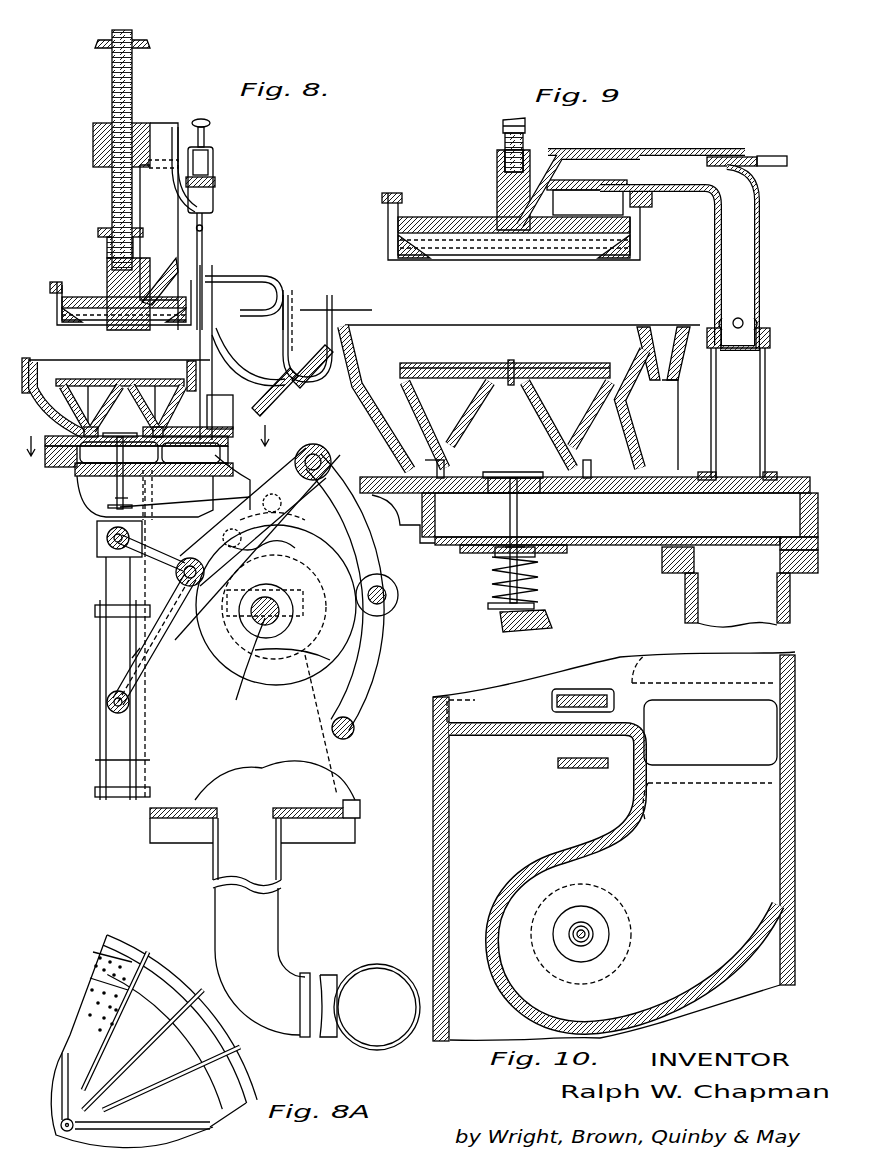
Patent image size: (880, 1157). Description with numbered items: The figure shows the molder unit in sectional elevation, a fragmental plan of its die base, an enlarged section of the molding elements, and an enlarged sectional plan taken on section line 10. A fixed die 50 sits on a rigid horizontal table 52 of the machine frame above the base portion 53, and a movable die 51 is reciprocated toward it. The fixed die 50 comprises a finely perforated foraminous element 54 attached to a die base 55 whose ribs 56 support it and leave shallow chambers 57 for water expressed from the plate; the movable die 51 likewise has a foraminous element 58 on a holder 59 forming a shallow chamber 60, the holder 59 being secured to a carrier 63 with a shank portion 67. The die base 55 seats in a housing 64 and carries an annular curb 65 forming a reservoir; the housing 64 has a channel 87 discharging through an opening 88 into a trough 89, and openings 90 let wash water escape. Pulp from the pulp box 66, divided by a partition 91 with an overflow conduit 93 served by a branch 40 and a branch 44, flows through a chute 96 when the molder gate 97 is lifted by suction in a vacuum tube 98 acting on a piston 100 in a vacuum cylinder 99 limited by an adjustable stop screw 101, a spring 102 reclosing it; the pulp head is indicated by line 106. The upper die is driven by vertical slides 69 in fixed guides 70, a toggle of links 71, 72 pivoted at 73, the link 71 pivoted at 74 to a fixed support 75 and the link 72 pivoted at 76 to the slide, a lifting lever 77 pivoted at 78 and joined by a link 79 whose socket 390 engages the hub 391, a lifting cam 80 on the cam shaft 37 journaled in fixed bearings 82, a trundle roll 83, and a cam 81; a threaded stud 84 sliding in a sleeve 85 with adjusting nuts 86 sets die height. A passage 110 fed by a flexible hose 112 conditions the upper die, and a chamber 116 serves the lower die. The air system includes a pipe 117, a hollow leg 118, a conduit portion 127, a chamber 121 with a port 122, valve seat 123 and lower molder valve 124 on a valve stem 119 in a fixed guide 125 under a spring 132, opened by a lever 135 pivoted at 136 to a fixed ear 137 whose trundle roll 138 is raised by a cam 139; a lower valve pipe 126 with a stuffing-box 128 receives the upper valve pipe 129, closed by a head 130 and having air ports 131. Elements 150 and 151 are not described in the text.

In FIG. 8, the section line 10 is at (151, 430).
In FIG. 8, the cam shaft 37 is at (244, 690).
In FIG. 8, the supply branch 40 is at (300, 416).
In FIG. 8, the overflow branch 44 is at (318, 392).
In FIG. 8, the fixed die 50 is at (78, 378).
In FIG. 9, the fixed die 50 is at (582, 342).
In FIG. 8, the movable die 51 is at (86, 300).
In FIG. 9, the movable die 51 is at (450, 260).
In FIG. 8, the table 52 is at (60, 456).
In FIG. 9, the table 52 is at (650, 478).
In FIG. 10, the table 52 is at (434, 860).
In FIG. 8, the base portion 53 is at (150, 820).
In FIG. 8, the foraminous element 54 is at (114, 380).
In FIG. 9, the foraminous element 54 is at (512, 365).
In FIG. 8, the die base 55 is at (72, 425).
In FIG. 9, the die base 55 is at (640, 420).
In FIG. 8A, the ribs 56 is at (115, 965).
In FIG. 9, the ribs 56 is at (510, 362).
In FIG. 8, the shallow chambers 57 is at (120, 382).
In FIG. 8A, the shallow chambers 57 is at (178, 1045).
In FIG. 9, the shallow chambers 57 is at (460, 365).
In FIG. 8, the foraminous element 58 is at (98, 300).
In FIG. 9, the foraminous element 58 is at (552, 240).
In FIG. 8, the holder 59 is at (66, 310).
In FIG. 9, the holder 59 is at (398, 238).
In FIG. 9, the shallow chamber 60 is at (565, 220).
In FIG. 8, the carrier 63 is at (50, 287).
In FIG. 9, the carrier 63 is at (400, 195).
In FIG. 8, the housing 64 is at (52, 400).
In FIG. 9, the housing 64 is at (380, 400).
In FIG. 8, the annular curb 65 is at (26, 358).
In FIG. 9, the annular curb 65 is at (640, 345).
In FIG. 8, the pulp box 66 is at (296, 300).
In FIG. 8, the shank portion 67 is at (108, 262).
In FIG. 9, the shank portion 67 is at (498, 172).
In FIG. 8, the vertical slides 69 is at (108, 578).
In FIG. 10, the vertical slides 69 is at (580, 700).
In FIG. 8, the fixed guides 70 is at (132, 735).
In FIG. 8, the toggle link 71 is at (170, 560).
In FIG. 8, the toggle link 72 is at (178, 655).
In FIG. 8, the toggle pivot 73 is at (172, 632).
In FIG. 8, the pivot 74 is at (107, 540).
In FIG. 8, the fixed support 75 is at (97, 530).
In FIG. 8, the pivot 76 is at (107, 706).
In FIG. 8, the lifting lever 77 is at (376, 660).
In FIG. 8, the pivot 78 is at (354, 736).
In FIG. 8, the link 79 is at (286, 470).
In FIG. 8, the lifting cam 80 is at (266, 630).
In FIG. 8, the cam 81 is at (316, 650).
In FIG. 8, the fixed bearings 82 is at (260, 598).
In FIG. 8, the trundle roll 83 is at (178, 578).
In FIG. 8, the threaded stud 84 is at (114, 118).
In FIG. 9, the threaded stud 84 is at (506, 120).
In FIG. 8, the sleeve 85 is at (96, 165).
In FIG. 8, the adjusting nuts 86 is at (142, 48).
In FIG. 8, the channel 87 is at (84, 380).
In FIG. 9, the channel 87 is at (682, 372).
In FIG. 8, the opening 88 is at (206, 404).
In FIG. 8, the trough 89 is at (400, 590).
In FIG. 9, the openings 90 is at (443, 496).
In FIG. 8, the partition 91 is at (286, 292).
In FIG. 8, the overflow conduit 93 is at (312, 312).
In FIG. 8, the chute 96 is at (230, 356).
In FIG. 8, the molder gate 97 is at (204, 250).
In FIG. 8, the vacuum tube 98 is at (177, 150).
In FIG. 8, the vacuum cylinder 99 is at (214, 160).
In FIG. 8, the piston 100 is at (216, 182).
In FIG. 8, the adjustable stop screw 101 is at (211, 124).
In FIG. 8, the spring 102 is at (258, 276).
In FIG. 8, the pulp head line 106 is at (335, 312).
In FIG. 8, the passage 110 is at (152, 265).
In FIG. 9, the passage 110 is at (616, 165).
In FIG. 9, the flexible hose 112 is at (780, 156).
In FIG. 8, the chamber 116 is at (152, 382).
In FIG. 9, the chamber 116 is at (560, 400).
In FIG. 8, the pipe 117 is at (268, 918).
In FIG. 8, the hollow leg 118 is at (240, 820).
In FIG. 9, the hollow leg 118 is at (688, 610).
In FIG. 10, the hollow leg 118 is at (612, 737).
In FIG. 8, the valve stem 119 is at (120, 454).
In FIG. 9, the valve stem 119 is at (500, 600).
In FIG. 10, the valve stem 119 is at (592, 925).
In FIG. 9, the chamber 121 is at (575, 500).
In FIG. 9, the port 122 is at (528, 500).
In FIG. 9, the valve seat 123 is at (500, 490).
In FIG. 8, the lower molder valve 124 is at (120, 433).
In FIG. 9, the lower molder valve 124 is at (510, 476).
In FIG. 8, the fixed guide 125 is at (191, 456).
In FIG. 9, the fixed guide 125 is at (530, 578).
In FIG. 10, the fixed guide 125 is at (588, 927).
In FIG. 8, the lower valve pipe 126 is at (213, 398).
In FIG. 9, the lower valve pipe 126 is at (766, 420).
In FIG. 8, the conduit portion 127 is at (142, 460).
In FIG. 9, the conduit portion 127 is at (620, 540).
In FIG. 10, the conduit portion 127 is at (560, 985).
In FIG. 9, the stuffing-box 128 is at (764, 328).
In FIG. 9, the upper valve pipe 129 is at (752, 258).
In FIG. 9, the head 130 is at (745, 355).
In FIG. 9, the air ports 131 is at (733, 320).
In FIG. 8, the spring 132 is at (114, 498).
In FIG. 9, the spring 132 is at (540, 604).
In FIG. 8, the lever 135 is at (200, 505).
In FIG. 9, the lever 135 is at (526, 629).
In FIG. 8, the pivot 136 is at (300, 520).
In FIG. 8, the fixed ear 137 is at (296, 548).
In FIG. 8, the trundle roll 138 is at (277, 607).
In FIG. 8, the cam 139 is at (228, 672).
In FIG. 9, the ring 150 is at (425, 462).
In FIG. 9, the plate line 151 is at (425, 364).
In FIG. 8, the socket 390 is at (330, 445).
In FIG. 8, the hub 391 is at (330, 462).